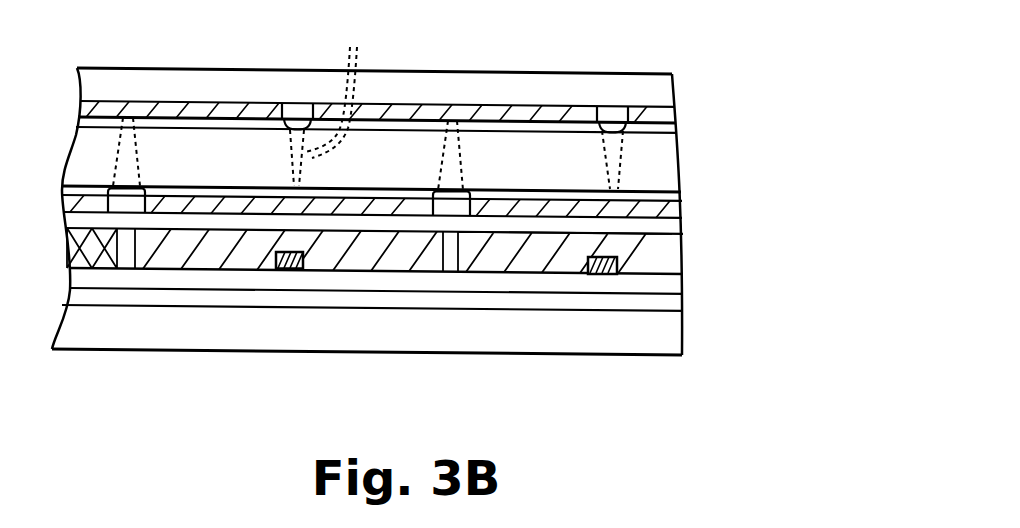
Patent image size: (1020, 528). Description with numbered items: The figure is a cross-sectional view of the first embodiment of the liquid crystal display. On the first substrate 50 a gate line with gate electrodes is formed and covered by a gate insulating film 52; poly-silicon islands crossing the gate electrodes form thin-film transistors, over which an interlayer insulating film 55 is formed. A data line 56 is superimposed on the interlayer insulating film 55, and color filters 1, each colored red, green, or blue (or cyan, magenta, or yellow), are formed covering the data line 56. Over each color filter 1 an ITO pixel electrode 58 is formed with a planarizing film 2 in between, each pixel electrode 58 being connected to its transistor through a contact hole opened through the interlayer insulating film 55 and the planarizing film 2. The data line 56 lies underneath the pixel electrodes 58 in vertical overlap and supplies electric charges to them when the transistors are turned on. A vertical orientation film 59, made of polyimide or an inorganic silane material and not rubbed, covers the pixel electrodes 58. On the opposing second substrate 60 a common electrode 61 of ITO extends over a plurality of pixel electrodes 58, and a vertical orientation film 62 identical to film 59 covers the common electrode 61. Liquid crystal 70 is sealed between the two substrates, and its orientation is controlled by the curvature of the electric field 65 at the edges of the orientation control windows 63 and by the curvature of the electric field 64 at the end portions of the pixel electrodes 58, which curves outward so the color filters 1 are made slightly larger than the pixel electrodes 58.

The color filter 1 is at (377, 258).
The planarizing film 2 is at (668, 233).
The first substrate 50 is at (662, 337).
The gate insulating film 52 is at (662, 303).
The interlayer insulating film 55 is at (662, 285).
The data line 56 is at (603, 367).
The pixel electrode 58 is at (668, 212).
The vertical orientation film 59 is at (664, 196).
The second substrate 60 is at (660, 93).
The common electrode 61 is at (660, 114).
The vertical orientation film 62 is at (662, 128).
The orientation control window 63 is at (610, 112).
The electric field 64 is at (442, 150).
The electric field 65 is at (339, 89).
The liquid crystal 70 is at (660, 171).